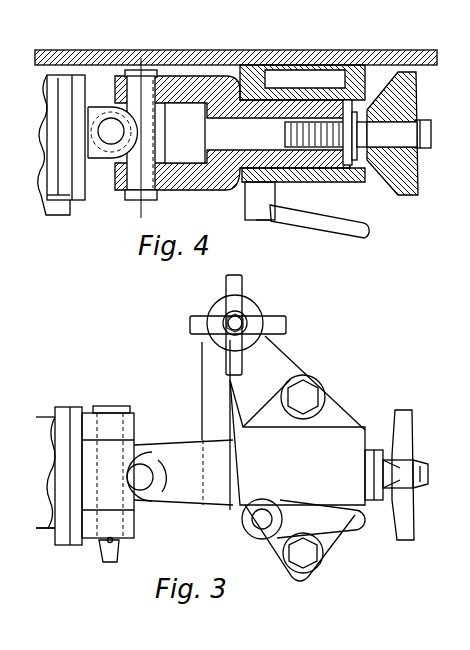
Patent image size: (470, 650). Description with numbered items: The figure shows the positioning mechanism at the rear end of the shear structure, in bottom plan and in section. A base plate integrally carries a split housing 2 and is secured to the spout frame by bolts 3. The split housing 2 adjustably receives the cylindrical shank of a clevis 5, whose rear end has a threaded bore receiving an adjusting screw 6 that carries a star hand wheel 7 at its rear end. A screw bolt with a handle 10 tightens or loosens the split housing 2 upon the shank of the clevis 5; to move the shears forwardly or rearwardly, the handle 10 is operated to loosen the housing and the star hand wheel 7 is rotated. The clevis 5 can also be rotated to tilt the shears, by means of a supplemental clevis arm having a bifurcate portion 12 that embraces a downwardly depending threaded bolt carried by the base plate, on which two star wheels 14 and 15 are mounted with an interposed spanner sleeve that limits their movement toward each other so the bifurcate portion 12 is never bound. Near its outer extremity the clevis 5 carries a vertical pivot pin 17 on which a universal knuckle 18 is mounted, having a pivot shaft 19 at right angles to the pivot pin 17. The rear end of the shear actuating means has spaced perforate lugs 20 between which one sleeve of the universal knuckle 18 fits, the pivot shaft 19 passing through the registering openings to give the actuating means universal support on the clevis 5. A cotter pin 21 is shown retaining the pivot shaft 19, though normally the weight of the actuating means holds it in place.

In FIG. 4, the split housing 2 is at (355, 182).
In FIG. 3, the bolts 3 is at (312, 397).
In FIG. 4, the clevis 5 is at (232, 82).
In FIG. 4, the adjusting screw 6 is at (316, 122).
In FIG. 4, the star hand wheel 7 is at (412, 162).
In FIG. 3, the star hand wheel 7 is at (400, 507).
In FIG. 4, the handle 10 is at (283, 224).
In FIG. 3, the bifurcate portion 12 is at (222, 332).
In FIG. 4, the star wheel 14 is at (26, 100).
In FIG. 4, the star wheel 15 is at (26, 163).
In FIG. 4, the vertical pivot pin 17 is at (133, 190).
In FIG. 3, the vertical pivot pin 17 is at (142, 481).
In FIG. 4, the universal knuckle 18 is at (162, 140).
In FIG. 3, the universal knuckle 18 is at (136, 446).
In FIG. 4, the pivot shaft 19 is at (108, 125).
In FIG. 3, the pivot shaft 19 is at (110, 406).
In FIG. 4, the perforate lugs 20 is at (94, 152).
In FIG. 3, the perforate lugs 20 is at (89, 418).
In FIG. 3, the cotter pin 21 is at (114, 541).